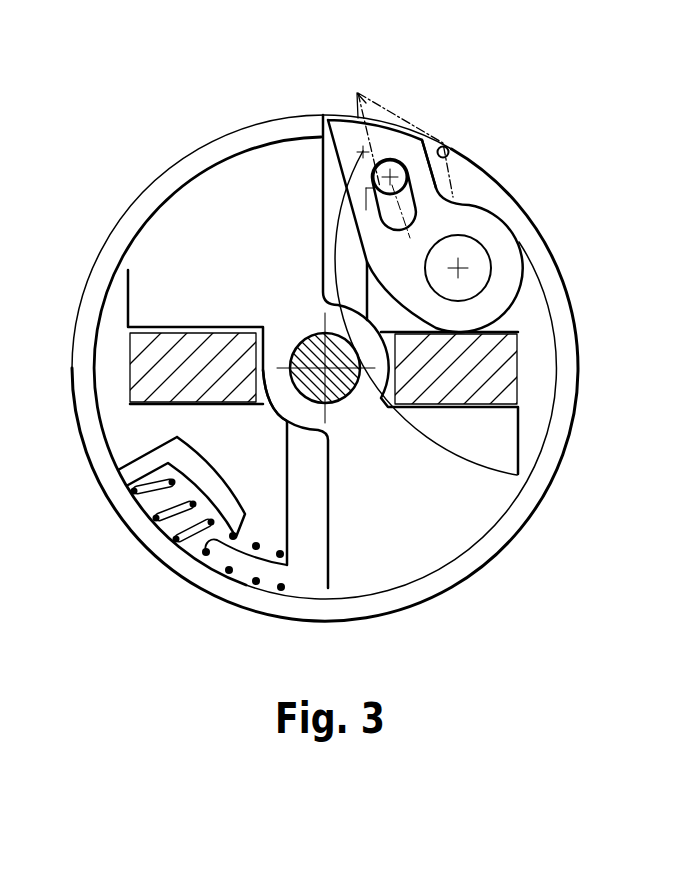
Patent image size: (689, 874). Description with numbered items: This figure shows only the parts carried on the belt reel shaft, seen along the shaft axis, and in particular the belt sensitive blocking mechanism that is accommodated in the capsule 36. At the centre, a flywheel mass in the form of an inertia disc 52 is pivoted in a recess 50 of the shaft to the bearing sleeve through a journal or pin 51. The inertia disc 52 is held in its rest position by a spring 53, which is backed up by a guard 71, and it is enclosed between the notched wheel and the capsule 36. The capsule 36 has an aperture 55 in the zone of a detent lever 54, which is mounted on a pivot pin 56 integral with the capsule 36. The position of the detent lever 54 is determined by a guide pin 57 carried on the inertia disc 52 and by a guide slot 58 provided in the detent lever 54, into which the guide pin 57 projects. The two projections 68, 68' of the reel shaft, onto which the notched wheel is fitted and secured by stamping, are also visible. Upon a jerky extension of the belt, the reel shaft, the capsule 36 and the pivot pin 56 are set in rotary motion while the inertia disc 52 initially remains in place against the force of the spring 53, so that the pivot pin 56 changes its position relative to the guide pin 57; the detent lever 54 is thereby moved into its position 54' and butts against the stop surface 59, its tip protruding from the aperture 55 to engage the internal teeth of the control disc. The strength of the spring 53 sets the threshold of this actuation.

The capsule 36 is at (507, 537).
The recess 50 is at (267, 409).
The journal or pin 51 is at (313, 343).
The inertia disc 52 is at (490, 495).
The spring 53 is at (147, 493).
The detent lever 54 is at (464, 189).
The position of detent lever 54' is at (405, 110).
The aperture 55 is at (425, 140).
The pivot pin 56 is at (473, 252).
The guide pin 57 is at (381, 178).
The guide slot 58 is at (418, 212).
The stop surface 59 is at (446, 148).
The projection 68 is at (212, 350).
The projection 68' is at (482, 395).
The guard 71 is at (170, 453).